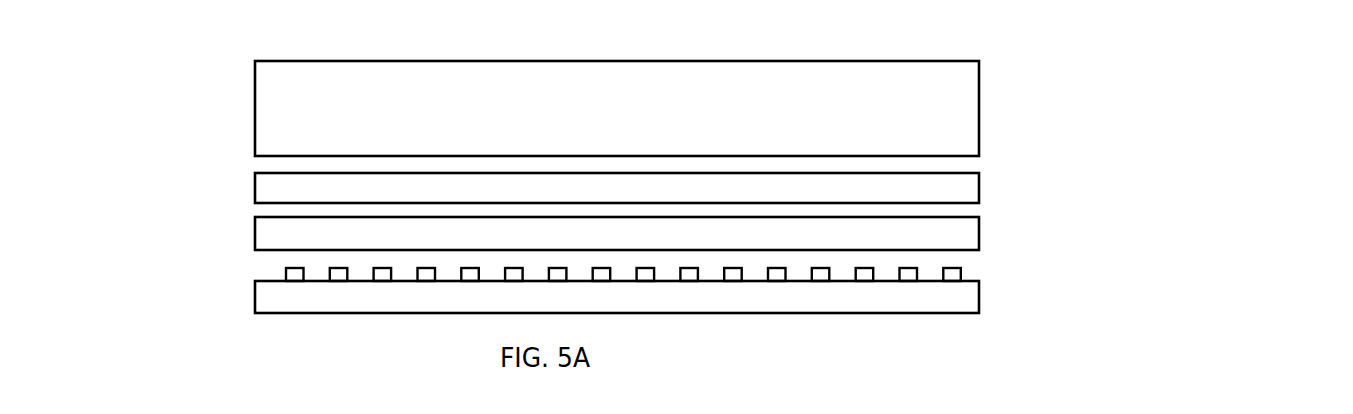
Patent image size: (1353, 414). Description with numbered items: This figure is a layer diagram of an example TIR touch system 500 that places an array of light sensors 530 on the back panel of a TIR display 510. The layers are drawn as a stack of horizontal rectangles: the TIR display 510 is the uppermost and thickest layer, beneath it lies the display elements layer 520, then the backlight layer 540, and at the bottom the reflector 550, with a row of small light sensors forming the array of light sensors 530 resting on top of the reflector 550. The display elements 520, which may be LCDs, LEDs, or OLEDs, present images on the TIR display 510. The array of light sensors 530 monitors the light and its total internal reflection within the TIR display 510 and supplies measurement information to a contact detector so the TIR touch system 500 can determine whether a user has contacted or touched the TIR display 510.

The TIR touch system 500 is at (193, 60).
The TIR display 510 is at (1168, 112).
The display elements layer 520 is at (1240, 196).
The array of light sensors 530 is at (1319, 279).
The backlight layer 540 is at (1160, 244).
The reflector 550 is at (1162, 314).